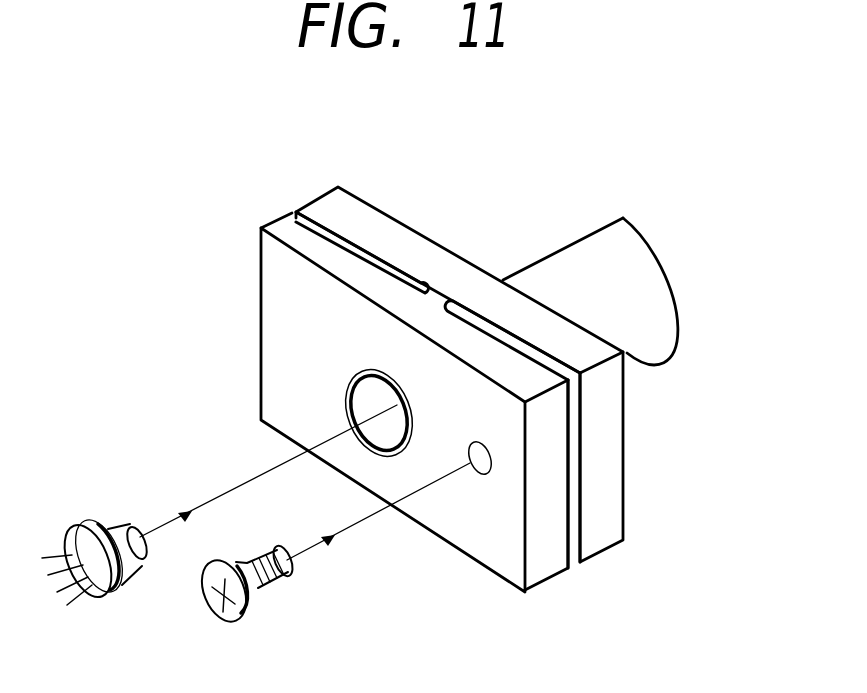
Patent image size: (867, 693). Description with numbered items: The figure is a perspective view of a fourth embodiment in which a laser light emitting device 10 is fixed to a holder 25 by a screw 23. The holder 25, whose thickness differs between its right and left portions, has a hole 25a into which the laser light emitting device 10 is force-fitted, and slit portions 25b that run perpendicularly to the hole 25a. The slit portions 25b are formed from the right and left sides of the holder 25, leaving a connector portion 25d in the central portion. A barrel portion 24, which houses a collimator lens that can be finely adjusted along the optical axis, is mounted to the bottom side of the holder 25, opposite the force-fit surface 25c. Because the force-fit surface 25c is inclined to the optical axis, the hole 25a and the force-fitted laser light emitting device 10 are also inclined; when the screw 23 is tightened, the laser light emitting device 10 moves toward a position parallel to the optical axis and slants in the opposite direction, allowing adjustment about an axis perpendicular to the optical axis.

The laser light emitting device 10 is at (102, 592).
The screw 23 is at (235, 610).
The barrel portion 24 is at (640, 243).
The holder 25 is at (353, 209).
The hole 25a is at (370, 398).
The slit portions 25b is at (303, 222).
The force-fit surface 25c is at (482, 548).
The connector portion 25d is at (437, 293).